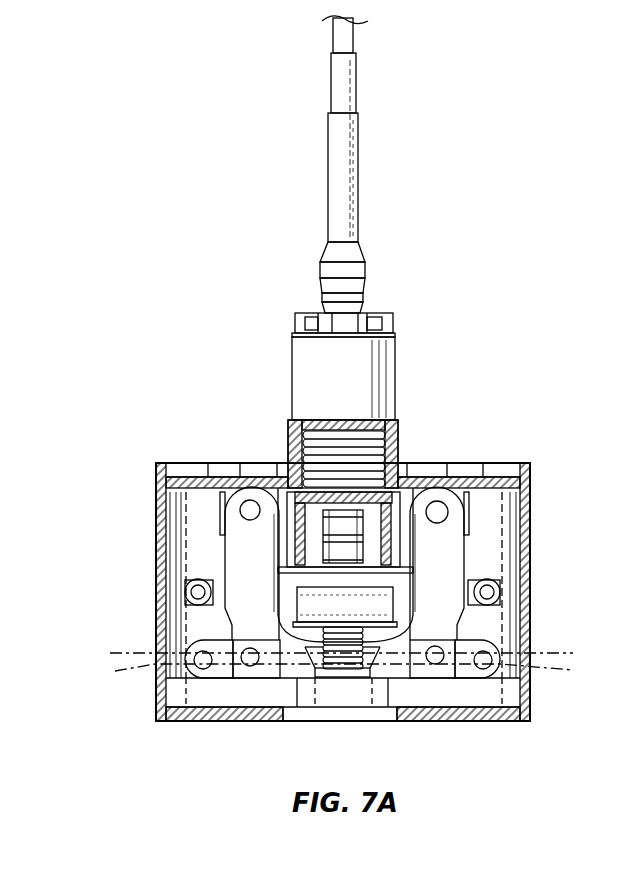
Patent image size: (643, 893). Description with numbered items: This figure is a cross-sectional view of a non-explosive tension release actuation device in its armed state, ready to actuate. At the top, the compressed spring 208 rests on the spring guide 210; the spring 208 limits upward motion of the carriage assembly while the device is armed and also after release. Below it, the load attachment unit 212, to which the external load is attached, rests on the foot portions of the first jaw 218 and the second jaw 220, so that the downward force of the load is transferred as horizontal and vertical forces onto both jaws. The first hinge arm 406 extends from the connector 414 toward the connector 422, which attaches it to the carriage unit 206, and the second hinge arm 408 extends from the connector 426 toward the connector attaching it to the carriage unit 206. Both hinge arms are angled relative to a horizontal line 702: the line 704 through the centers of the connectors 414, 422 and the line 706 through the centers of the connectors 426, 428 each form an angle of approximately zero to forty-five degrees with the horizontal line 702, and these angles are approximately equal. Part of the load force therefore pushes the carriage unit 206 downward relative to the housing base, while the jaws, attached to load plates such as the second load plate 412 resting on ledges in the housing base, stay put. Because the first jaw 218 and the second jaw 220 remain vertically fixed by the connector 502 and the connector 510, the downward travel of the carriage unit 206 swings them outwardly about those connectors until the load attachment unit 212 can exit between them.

The carriage unit 206 is at (210, 622).
The spring 208 is at (347, 448).
The spring guide 210 is at (292, 493).
The load attachment unit 212 is at (303, 632).
The first jaw 218 is at (238, 538).
The second jaw 220 is at (450, 567).
The first hinge arm 406 is at (223, 667).
The second hinge arm 408 is at (463, 668).
The second load plate 412 is at (232, 497).
The connector 414 is at (250, 667).
The connector 422 is at (202, 668).
The connector 426 is at (435, 664).
The connector 428 is at (483, 669).
The connector 502 is at (242, 510).
The connector 510 is at (437, 502).
The horizontal line 702 is at (130, 653).
The line 704 is at (132, 668).
The line 706 is at (542, 668).